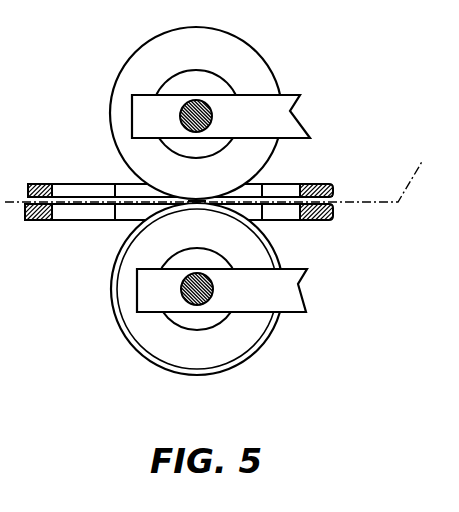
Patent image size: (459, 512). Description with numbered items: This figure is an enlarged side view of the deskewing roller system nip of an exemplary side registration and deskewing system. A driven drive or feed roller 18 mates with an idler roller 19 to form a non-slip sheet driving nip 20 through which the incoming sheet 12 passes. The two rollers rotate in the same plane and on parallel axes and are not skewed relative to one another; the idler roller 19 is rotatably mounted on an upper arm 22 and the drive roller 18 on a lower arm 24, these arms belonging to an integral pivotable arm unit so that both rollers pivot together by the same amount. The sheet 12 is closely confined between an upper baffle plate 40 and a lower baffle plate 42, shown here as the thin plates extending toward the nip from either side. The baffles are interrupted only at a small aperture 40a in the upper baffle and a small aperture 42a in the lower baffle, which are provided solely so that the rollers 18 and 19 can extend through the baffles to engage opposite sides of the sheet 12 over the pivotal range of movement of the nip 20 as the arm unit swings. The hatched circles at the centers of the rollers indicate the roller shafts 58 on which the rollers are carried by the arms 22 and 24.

The sheet 12 is at (228, 174).
The drive roller 18 is at (168, 348).
The idler roller 19 is at (270, 82).
The sheet driving nip 20 is at (200, 202).
The upper arm 22 is at (291, 110).
The lower arm 24 is at (278, 298).
The upper baffle plate 40 is at (323, 183).
The aperture in upper baffle 40a is at (75, 183).
The lower baffle plate 42 is at (323, 222).
The aperture in lower baffle 42a is at (91, 220).
The roller shaft 58 is at (200, 305).